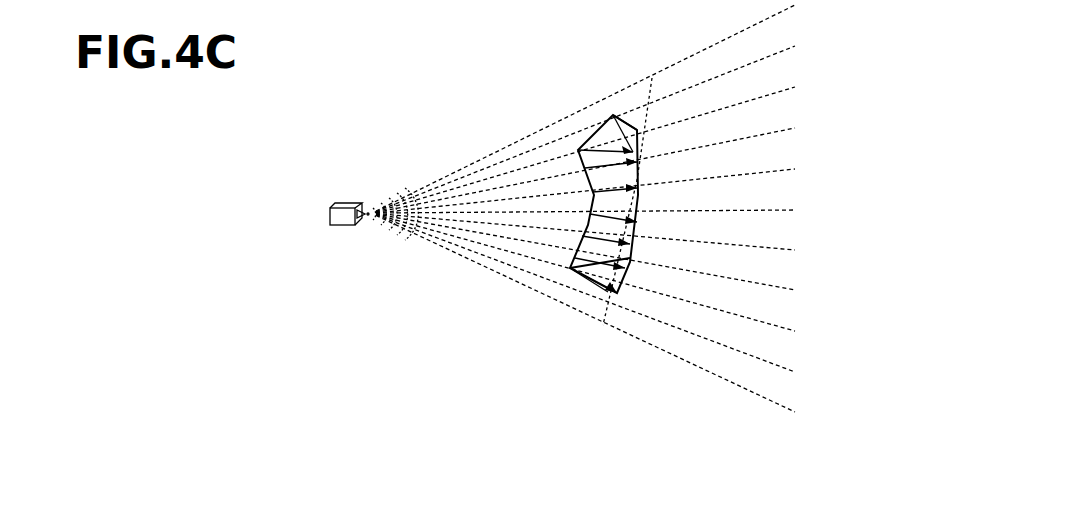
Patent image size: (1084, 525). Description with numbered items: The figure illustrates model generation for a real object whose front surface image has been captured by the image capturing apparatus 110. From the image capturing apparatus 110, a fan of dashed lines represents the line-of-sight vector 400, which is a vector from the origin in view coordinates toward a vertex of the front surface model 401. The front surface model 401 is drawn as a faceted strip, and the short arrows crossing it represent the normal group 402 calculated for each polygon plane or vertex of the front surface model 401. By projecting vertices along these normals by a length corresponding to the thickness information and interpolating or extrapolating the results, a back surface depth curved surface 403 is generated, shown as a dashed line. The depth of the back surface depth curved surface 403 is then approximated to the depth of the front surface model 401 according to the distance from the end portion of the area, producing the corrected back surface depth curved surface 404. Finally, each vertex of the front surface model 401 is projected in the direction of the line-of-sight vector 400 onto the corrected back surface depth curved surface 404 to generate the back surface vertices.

The image capturing apparatus 110 is at (330, 214).
The line-of-sight vector 400 is at (452, 172).
The front surface model 401 is at (595, 128).
The normal group 402 is at (588, 270).
The back surface depth curved surface 403 is at (647, 127).
The corrected back surface depth curved surface 404 is at (632, 127).